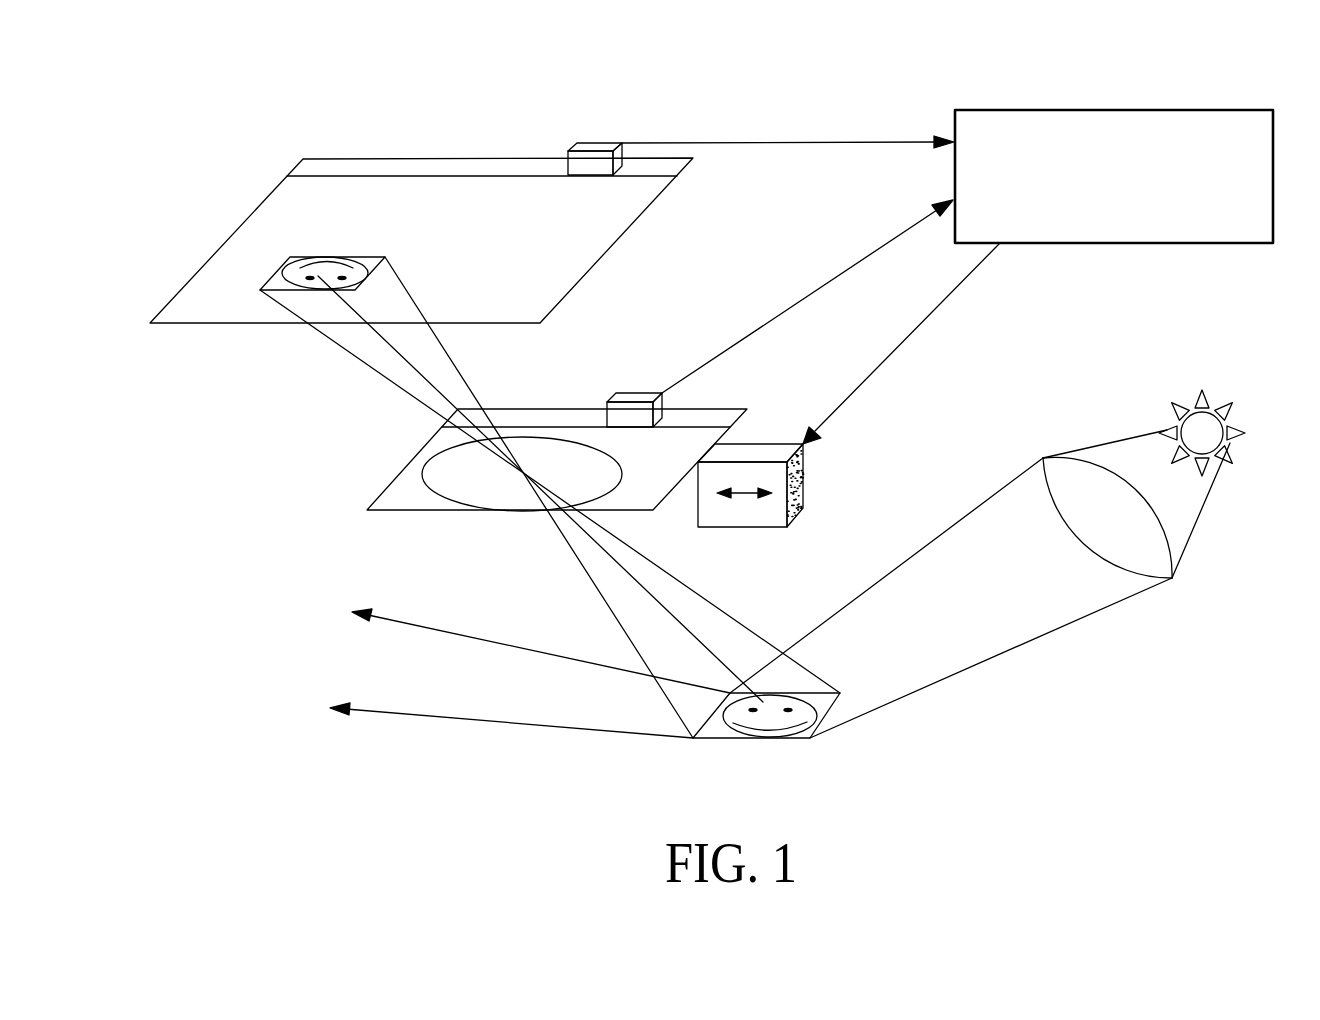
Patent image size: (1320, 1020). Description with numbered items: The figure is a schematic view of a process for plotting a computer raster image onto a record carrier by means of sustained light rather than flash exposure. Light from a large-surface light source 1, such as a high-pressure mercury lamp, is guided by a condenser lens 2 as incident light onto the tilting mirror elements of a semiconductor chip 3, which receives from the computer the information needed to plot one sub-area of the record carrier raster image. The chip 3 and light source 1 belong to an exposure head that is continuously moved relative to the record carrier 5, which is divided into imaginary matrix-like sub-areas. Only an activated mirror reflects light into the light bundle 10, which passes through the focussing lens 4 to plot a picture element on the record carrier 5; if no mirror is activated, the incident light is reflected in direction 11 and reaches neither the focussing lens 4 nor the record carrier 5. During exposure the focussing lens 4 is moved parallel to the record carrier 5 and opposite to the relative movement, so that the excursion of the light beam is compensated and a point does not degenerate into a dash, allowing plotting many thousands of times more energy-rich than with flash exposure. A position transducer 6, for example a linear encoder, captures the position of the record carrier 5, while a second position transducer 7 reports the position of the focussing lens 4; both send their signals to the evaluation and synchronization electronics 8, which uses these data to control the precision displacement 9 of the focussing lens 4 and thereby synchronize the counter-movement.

The light source 1 is at (1242, 431).
The condenser lens 2 is at (1173, 573).
The chip 3 is at (820, 717).
The focussing lens 4 is at (422, 470).
The record carrier 5 is at (607, 252).
The position transducer 6 is at (574, 142).
The position transducer 7 is at (617, 392).
The evaluation and synchronization electronics 8 is at (1252, 108).
The precision displacement 9 is at (805, 490).
The light bundle 10 is at (687, 600).
The direction 11 is at (472, 655).